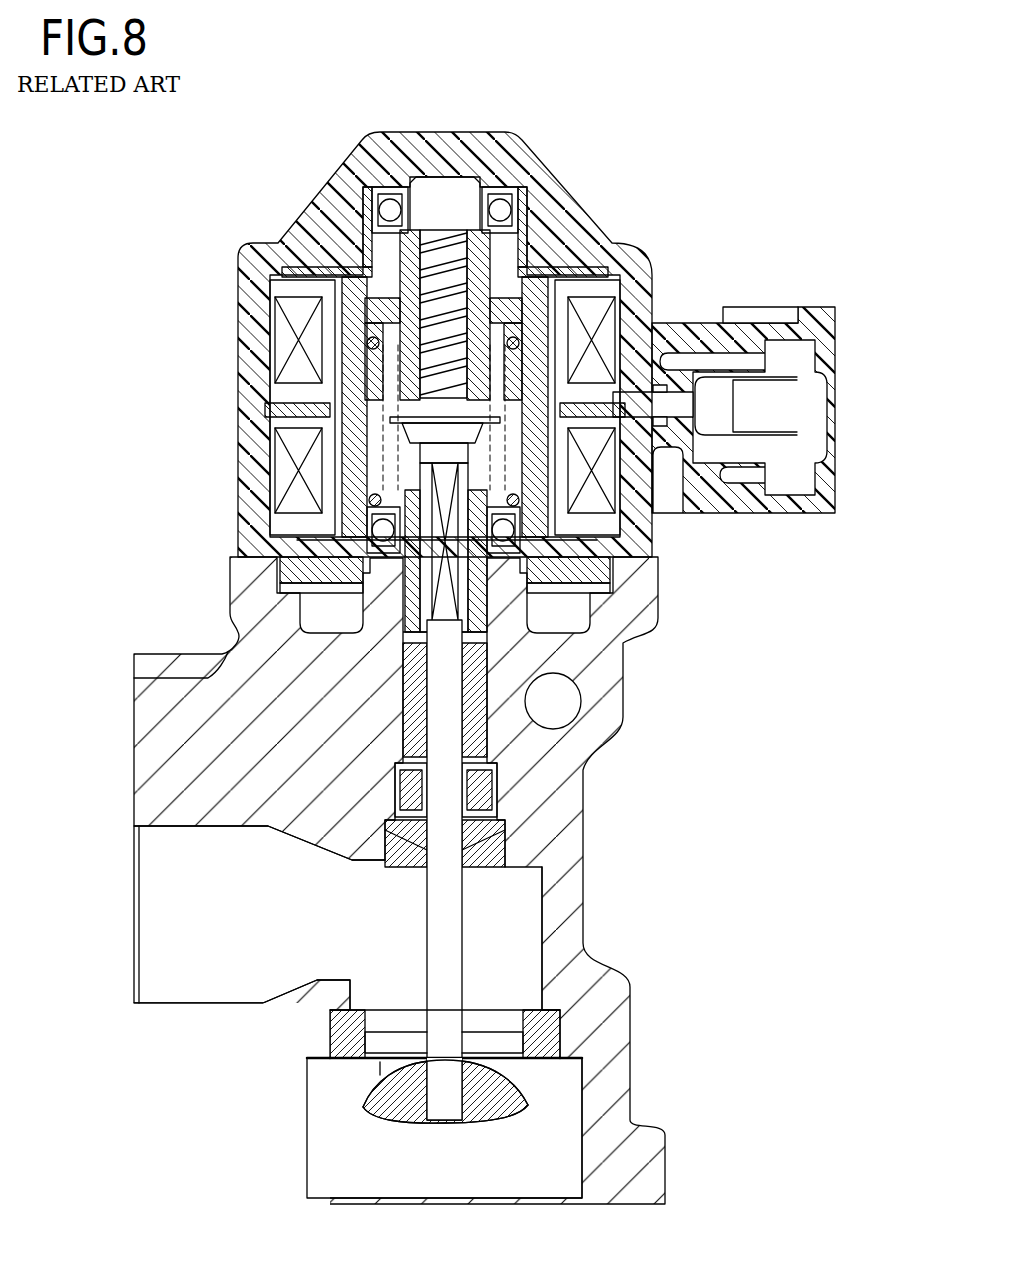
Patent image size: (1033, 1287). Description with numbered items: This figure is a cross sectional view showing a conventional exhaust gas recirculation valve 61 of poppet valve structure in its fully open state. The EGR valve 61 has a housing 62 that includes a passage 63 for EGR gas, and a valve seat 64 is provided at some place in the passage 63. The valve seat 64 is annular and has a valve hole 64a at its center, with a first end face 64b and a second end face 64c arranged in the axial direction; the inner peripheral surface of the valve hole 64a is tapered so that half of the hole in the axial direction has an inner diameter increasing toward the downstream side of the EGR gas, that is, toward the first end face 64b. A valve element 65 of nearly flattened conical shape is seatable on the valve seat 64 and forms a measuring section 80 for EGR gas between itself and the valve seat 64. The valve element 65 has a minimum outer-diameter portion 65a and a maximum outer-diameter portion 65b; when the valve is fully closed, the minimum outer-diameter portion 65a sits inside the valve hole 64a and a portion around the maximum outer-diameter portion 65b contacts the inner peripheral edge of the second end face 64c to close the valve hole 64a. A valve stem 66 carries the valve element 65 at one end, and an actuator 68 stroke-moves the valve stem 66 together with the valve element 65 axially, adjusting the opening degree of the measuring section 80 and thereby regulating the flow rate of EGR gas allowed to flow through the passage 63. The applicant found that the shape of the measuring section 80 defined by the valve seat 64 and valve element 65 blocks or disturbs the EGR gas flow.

The EGR valve 61 is at (600, 112).
The housing 62 is at (230, 577).
The passage 63 is at (231, 933).
The valve seat 64 is at (560, 1030).
The valve hole 64a is at (382, 1045).
The first end face 64b is at (553, 1010).
The second end face 64c is at (542, 1062).
The valve element 65 is at (497, 1107).
The minimum outer-diameter portion 65a is at (420, 1062).
The maximum outer-diameter portion 65b is at (362, 1108).
The valve stem 66 is at (455, 900).
The actuator 68 is at (238, 358).
The measuring section 80 is at (380, 1075).